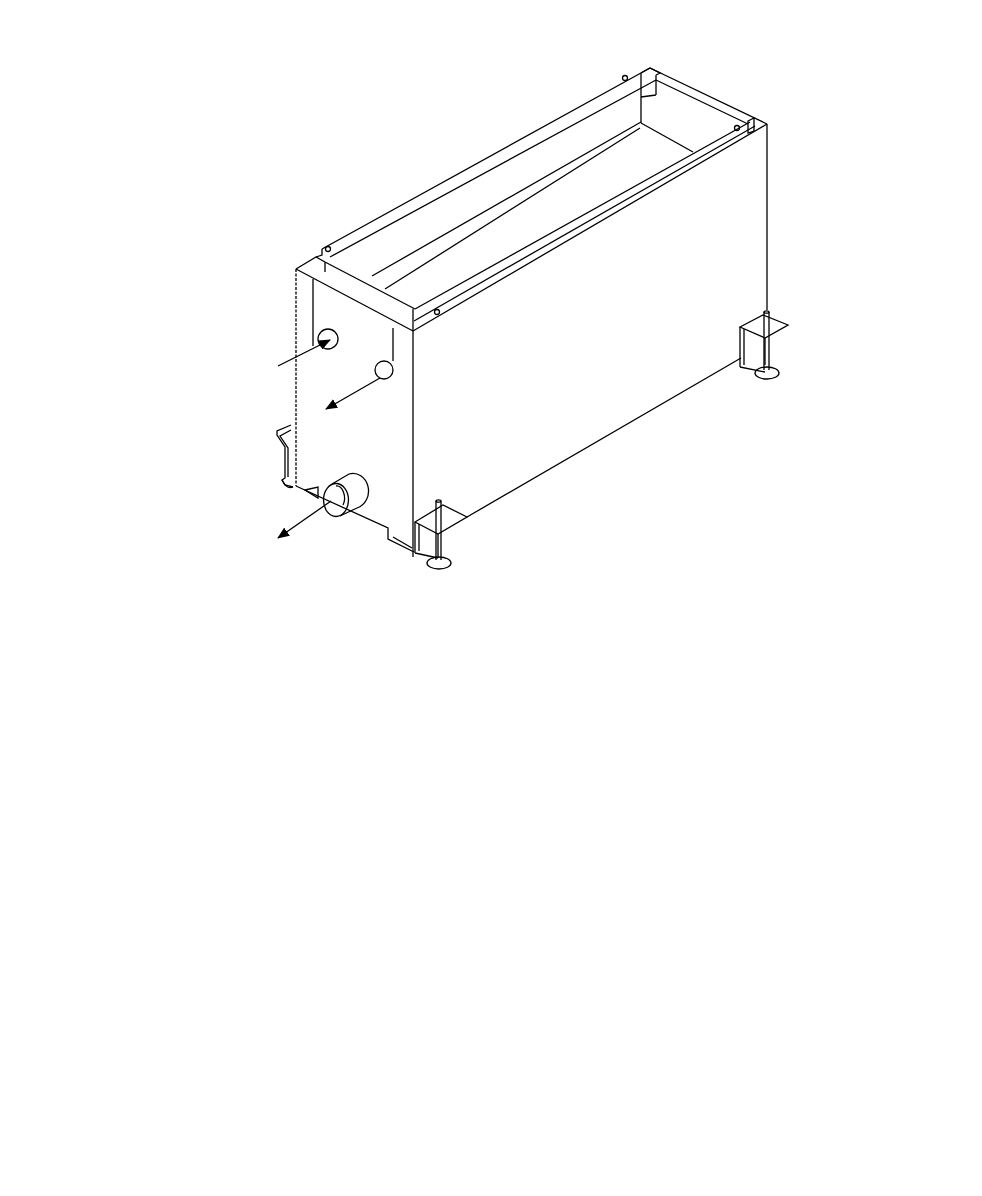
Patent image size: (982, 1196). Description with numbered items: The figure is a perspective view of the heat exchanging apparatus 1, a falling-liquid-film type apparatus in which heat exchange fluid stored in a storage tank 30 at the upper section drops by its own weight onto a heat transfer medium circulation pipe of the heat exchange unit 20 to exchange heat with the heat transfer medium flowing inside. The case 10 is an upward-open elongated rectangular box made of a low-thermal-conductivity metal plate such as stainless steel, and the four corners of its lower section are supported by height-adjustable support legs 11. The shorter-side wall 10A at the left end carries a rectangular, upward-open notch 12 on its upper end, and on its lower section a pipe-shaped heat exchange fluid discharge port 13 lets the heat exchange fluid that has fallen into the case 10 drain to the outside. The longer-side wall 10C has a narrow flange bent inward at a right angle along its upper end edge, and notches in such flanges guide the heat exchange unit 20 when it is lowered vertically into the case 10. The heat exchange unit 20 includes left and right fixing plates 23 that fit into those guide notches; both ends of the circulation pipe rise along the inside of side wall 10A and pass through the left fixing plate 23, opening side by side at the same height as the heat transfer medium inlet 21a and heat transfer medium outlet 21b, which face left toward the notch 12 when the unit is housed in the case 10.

The heat exchanging apparatus 1 is at (543, 97).
The case 10 is at (750, 250).
The side wall 10A is at (322, 411).
The side wall 10C is at (616, 422).
The support leg 11 is at (290, 465).
The notch 12 is at (386, 342).
The heat exchange fluid discharge port 13 is at (343, 516).
The heat exchange unit 20 is at (332, 304).
The heat transfer medium inlet 21a is at (327, 349).
The heat transfer medium outlet 21b is at (384, 380).
The fixing plate 23 is at (703, 112).
The storage tank 30 is at (437, 217).